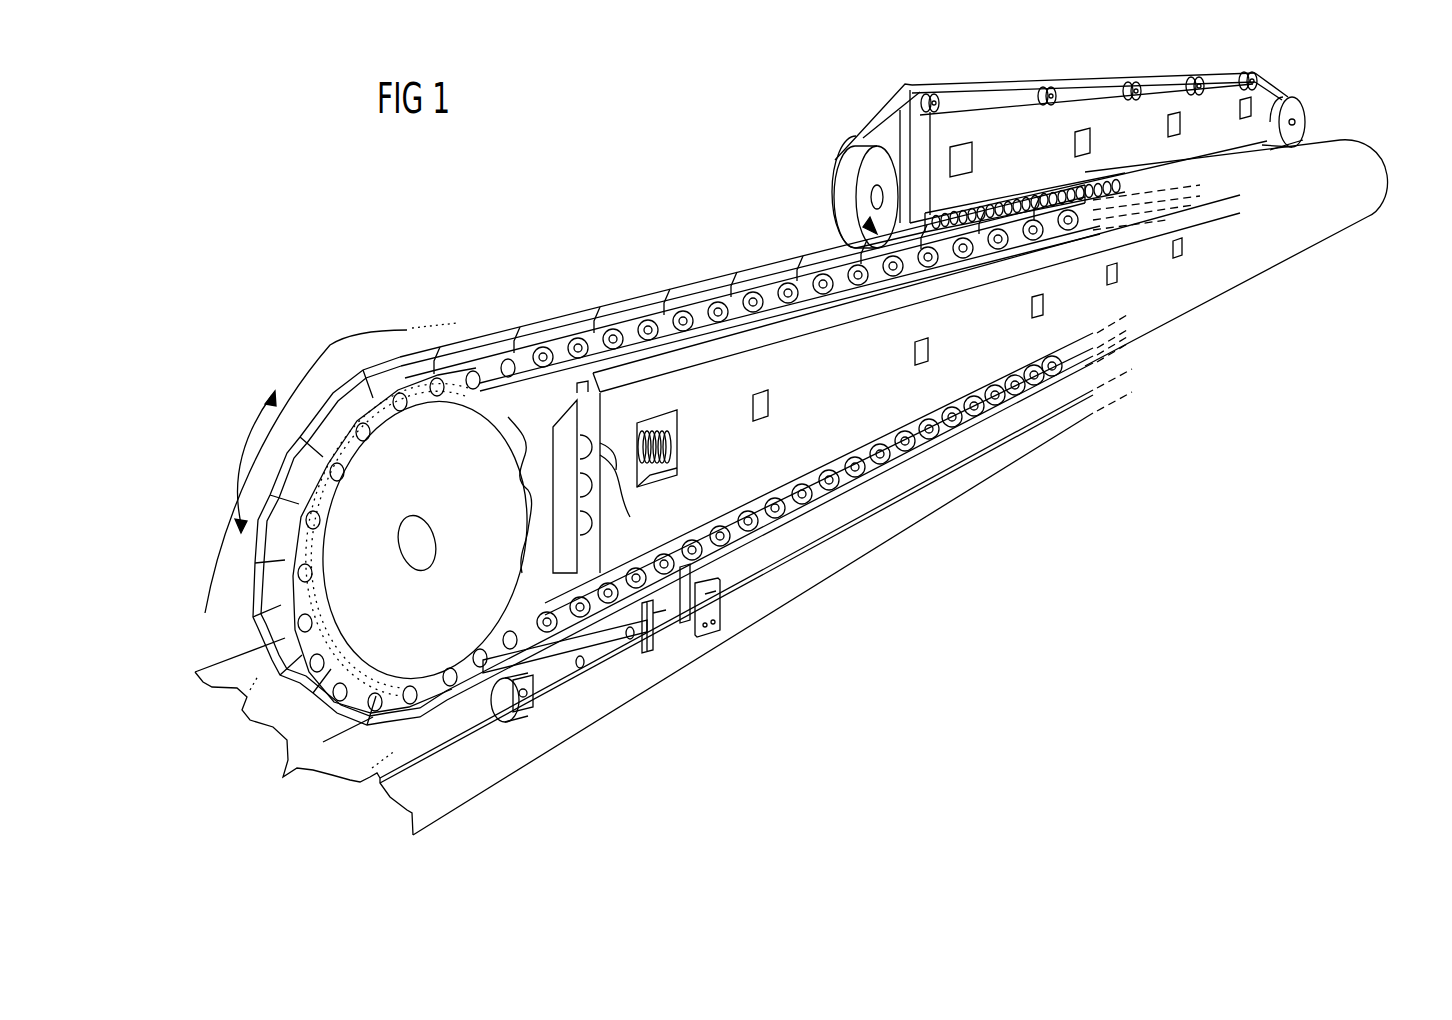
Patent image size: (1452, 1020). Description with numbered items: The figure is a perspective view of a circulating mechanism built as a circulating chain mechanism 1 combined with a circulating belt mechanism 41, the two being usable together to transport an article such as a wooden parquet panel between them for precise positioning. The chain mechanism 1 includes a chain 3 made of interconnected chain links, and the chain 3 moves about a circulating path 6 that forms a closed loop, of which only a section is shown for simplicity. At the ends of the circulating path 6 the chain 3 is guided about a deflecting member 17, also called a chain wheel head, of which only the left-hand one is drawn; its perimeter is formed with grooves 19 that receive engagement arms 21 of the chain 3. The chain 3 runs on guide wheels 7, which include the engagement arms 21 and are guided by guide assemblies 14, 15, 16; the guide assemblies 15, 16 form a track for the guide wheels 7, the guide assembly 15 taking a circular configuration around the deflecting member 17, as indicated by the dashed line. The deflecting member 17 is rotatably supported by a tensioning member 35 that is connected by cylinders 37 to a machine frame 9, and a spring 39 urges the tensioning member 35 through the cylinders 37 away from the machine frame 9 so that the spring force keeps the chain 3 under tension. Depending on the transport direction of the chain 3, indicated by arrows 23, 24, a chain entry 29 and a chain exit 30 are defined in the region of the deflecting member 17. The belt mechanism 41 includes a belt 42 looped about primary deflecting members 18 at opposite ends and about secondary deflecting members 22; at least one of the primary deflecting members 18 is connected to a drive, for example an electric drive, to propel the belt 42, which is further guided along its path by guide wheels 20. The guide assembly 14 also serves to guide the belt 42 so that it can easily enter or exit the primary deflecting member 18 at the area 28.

The circulating chain mechanism 1 is at (363, 250).
The chain 3 is at (557, 313).
The circulating path 6 is at (1313, 245).
The guide wheels 7 is at (687, 316).
The machine frame 9 is at (833, 423).
The guide assembly 14 is at (917, 233).
The guide assembly 15 is at (525, 383).
The guide assembly 16 is at (846, 293).
The deflecting member 17 is at (473, 420).
The primary deflecting members 18 is at (877, 167).
The grooves 19 is at (592, 470).
The guide wheels 20 is at (1050, 88).
The engagement arms 21 is at (694, 313).
The secondary deflecting members 22 is at (933, 87).
The arrow 23 is at (223, 503).
The arrow 24 is at (318, 388).
The area 28 is at (873, 230).
The chain entry 29 is at (295, 745).
The chain exit 30 is at (307, 402).
The tensioning member 35 is at (593, 567).
The cylinders 37 is at (593, 457).
The spring 39 is at (670, 450).
The circulating belt mechanism 41 is at (1090, 70).
The belt 42 is at (882, 110).